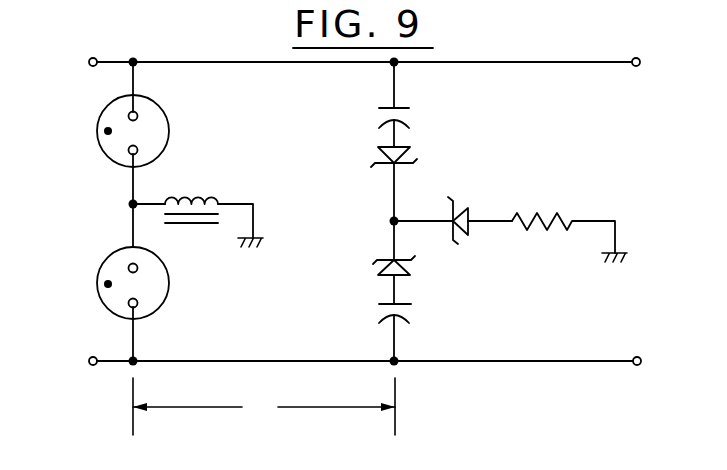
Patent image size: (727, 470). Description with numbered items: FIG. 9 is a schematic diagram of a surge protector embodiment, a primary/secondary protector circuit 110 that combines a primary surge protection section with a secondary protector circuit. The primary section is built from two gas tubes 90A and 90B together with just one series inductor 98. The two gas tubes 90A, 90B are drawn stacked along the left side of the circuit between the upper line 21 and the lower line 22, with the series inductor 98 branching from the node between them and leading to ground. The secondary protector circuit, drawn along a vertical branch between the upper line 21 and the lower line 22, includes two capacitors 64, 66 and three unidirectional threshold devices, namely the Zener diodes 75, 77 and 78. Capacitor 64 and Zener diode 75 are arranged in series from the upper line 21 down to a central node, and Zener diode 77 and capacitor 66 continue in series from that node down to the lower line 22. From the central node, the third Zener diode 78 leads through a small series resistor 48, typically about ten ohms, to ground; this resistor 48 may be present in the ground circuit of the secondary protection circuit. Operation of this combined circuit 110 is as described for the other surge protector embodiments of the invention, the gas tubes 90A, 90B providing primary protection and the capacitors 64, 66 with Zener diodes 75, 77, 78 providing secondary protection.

The primary/secondary protector circuit 110 is at (322, 156).
The tip conductor line 21 is at (238, 63).
The ring conductor line 22 is at (209, 360).
The gas tube 90A is at (110, 168).
The gas tube 90B is at (100, 270).
The series inductor 98 is at (200, 197).
The capacitor 64 is at (402, 115).
The Zener diode 75 is at (412, 155).
The Zener diode 77 is at (405, 267).
The capacitor 66 is at (403, 312).
The Zener diode 78 is at (455, 208).
The series resistor 48 is at (542, 215).